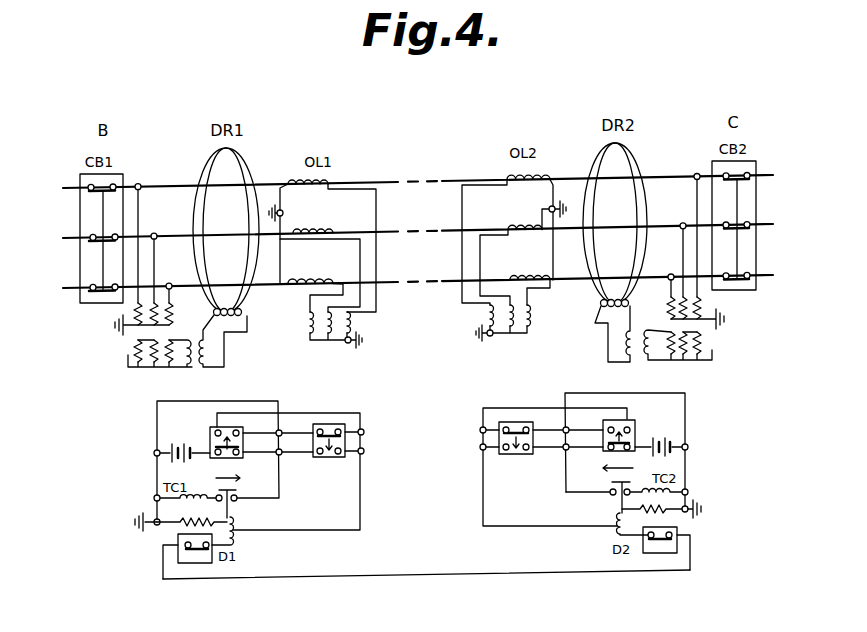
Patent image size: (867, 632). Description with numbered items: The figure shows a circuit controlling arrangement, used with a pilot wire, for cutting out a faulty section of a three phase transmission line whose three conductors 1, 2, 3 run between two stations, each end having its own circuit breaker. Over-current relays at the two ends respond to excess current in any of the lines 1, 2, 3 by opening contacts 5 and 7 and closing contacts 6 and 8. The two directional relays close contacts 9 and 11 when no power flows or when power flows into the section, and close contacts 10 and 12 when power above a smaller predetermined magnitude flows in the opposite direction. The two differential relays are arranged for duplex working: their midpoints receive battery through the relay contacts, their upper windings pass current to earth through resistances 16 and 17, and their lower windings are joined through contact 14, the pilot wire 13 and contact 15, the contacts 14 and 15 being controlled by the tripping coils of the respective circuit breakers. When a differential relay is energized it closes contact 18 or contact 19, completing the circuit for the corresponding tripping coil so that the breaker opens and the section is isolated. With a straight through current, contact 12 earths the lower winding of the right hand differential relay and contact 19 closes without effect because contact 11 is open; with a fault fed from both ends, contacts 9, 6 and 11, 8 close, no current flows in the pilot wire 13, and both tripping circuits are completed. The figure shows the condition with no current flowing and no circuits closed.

The transmission line conductor 1 is at (415, 179).
The transmission line conductor 2 is at (426, 231).
The transmission line conductor 3 is at (429, 281).
The over-current relay contact 5 is at (338, 429).
The over-current relay contact 6 is at (338, 454).
The over-current relay contact 7 is at (526, 427).
The over-current relay contact 8 is at (526, 450).
The directional relay contact 9 is at (236, 455).
The directional relay contact 10 is at (236, 430).
The directional relay contact 11 is at (626, 450).
The directional relay contact 12 is at (626, 427).
The pilot wire 13 is at (411, 576).
The pilot wire circuit contact 14 is at (188, 542).
The pilot wire circuit contact 15 is at (670, 537).
The resistance 16 is at (184, 522).
The resistance 17 is at (672, 507).
The differential relay contact 18 is at (237, 497).
The differential relay contact 19 is at (610, 491).